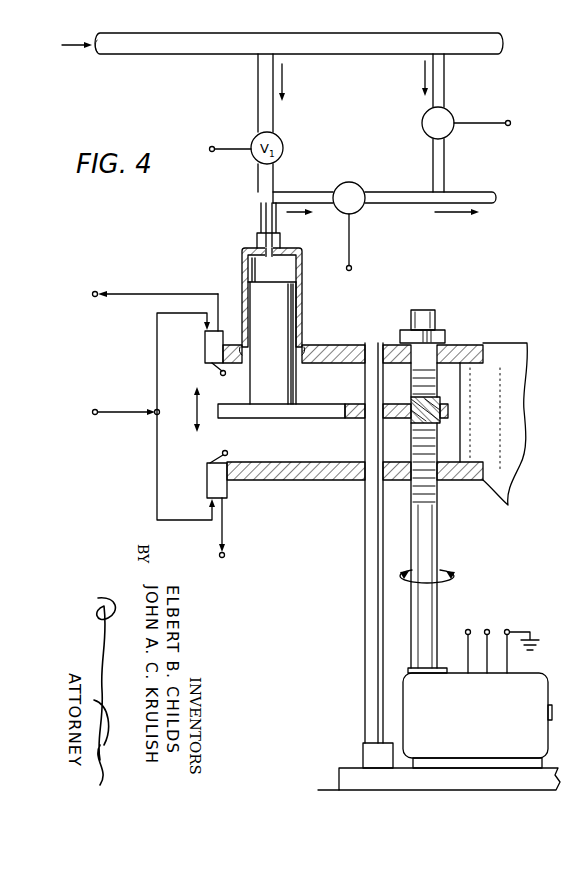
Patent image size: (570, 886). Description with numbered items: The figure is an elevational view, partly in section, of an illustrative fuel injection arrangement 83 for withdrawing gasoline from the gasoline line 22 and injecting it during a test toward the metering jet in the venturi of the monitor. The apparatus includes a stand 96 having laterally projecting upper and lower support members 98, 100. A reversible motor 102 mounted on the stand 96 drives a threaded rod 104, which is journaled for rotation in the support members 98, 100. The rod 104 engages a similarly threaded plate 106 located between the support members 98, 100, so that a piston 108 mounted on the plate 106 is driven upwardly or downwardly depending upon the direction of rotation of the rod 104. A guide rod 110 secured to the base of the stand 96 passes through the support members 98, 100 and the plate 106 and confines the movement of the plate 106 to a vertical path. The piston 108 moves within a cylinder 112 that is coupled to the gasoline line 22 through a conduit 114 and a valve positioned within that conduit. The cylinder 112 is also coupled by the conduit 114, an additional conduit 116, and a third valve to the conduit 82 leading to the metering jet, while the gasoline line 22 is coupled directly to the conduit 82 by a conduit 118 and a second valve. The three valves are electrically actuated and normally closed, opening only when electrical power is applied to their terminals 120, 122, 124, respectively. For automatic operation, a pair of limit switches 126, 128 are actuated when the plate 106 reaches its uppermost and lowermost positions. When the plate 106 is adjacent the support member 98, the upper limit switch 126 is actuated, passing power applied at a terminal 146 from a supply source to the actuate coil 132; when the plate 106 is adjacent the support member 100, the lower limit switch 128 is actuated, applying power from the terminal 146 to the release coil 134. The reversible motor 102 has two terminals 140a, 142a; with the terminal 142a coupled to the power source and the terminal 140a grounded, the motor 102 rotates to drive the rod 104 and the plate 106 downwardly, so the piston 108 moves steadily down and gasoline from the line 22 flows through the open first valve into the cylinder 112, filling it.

The gasoline line 22 is at (497, 32).
The conduit 118 is at (445, 95).
The terminal 120 is at (208, 148).
The terminal 122 is at (510, 126).
The conduit 82 is at (508, 172).
The additional conduit 116 is at (322, 177).
The terminal 124 is at (378, 267).
The metering assembly 83 is at (500, 255).
The conduit 114 is at (260, 198).
The cylinder 112 is at (302, 289).
The piston 108 is at (248, 388).
The upper support member 98 is at (353, 343).
The stand 96 is at (513, 343).
The threaded plate 106 is at (349, 388).
The lower support member 100 is at (305, 481).
The guide rod 110 is at (366, 630).
The threaded rod 104 is at (438, 548).
The upper limit switch 126 is at (205, 352).
The lower limit switch 128 is at (207, 487).
The actuate coil 132 is at (147, 292).
The terminal 146 is at (78, 400).
The release coil 134 is at (282, 541).
The motor terminal 140a is at (475, 613).
The motor terminal 142a is at (509, 629).
The reversible motor 102 is at (403, 708).